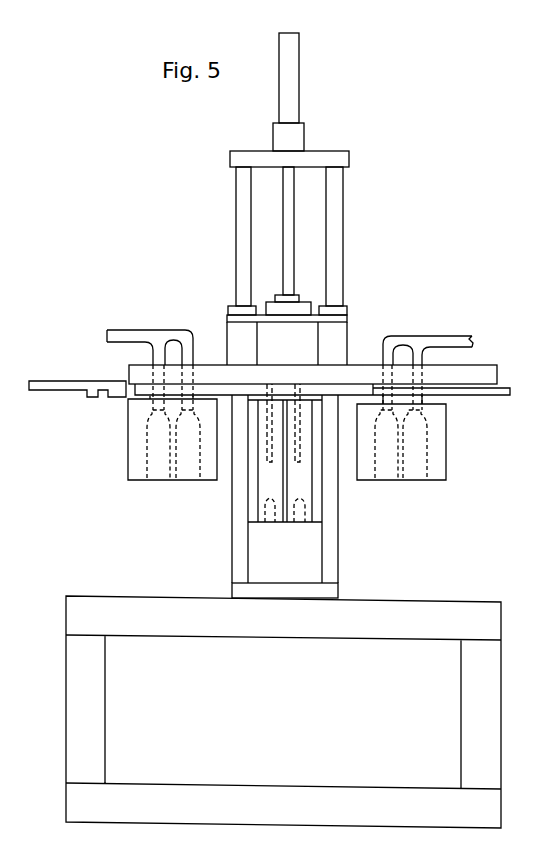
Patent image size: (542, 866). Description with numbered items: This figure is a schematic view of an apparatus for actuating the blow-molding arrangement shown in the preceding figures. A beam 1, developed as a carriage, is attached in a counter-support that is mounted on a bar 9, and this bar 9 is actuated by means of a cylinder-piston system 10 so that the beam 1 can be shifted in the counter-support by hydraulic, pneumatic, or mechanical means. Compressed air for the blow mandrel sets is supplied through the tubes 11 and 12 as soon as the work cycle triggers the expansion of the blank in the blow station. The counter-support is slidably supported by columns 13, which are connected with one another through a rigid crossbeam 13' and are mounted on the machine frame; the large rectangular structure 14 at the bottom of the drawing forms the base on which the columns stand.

The beam 1 is at (358, 388).
The bar 9 is at (206, 370).
The cylinder-piston system 10 is at (293, 102).
The tube 11 is at (130, 333).
The tube 12 is at (450, 340).
The columns 13 is at (263, 241).
The rigid crossbeam 13' is at (264, 153).
The base frame 14 is at (149, 606).